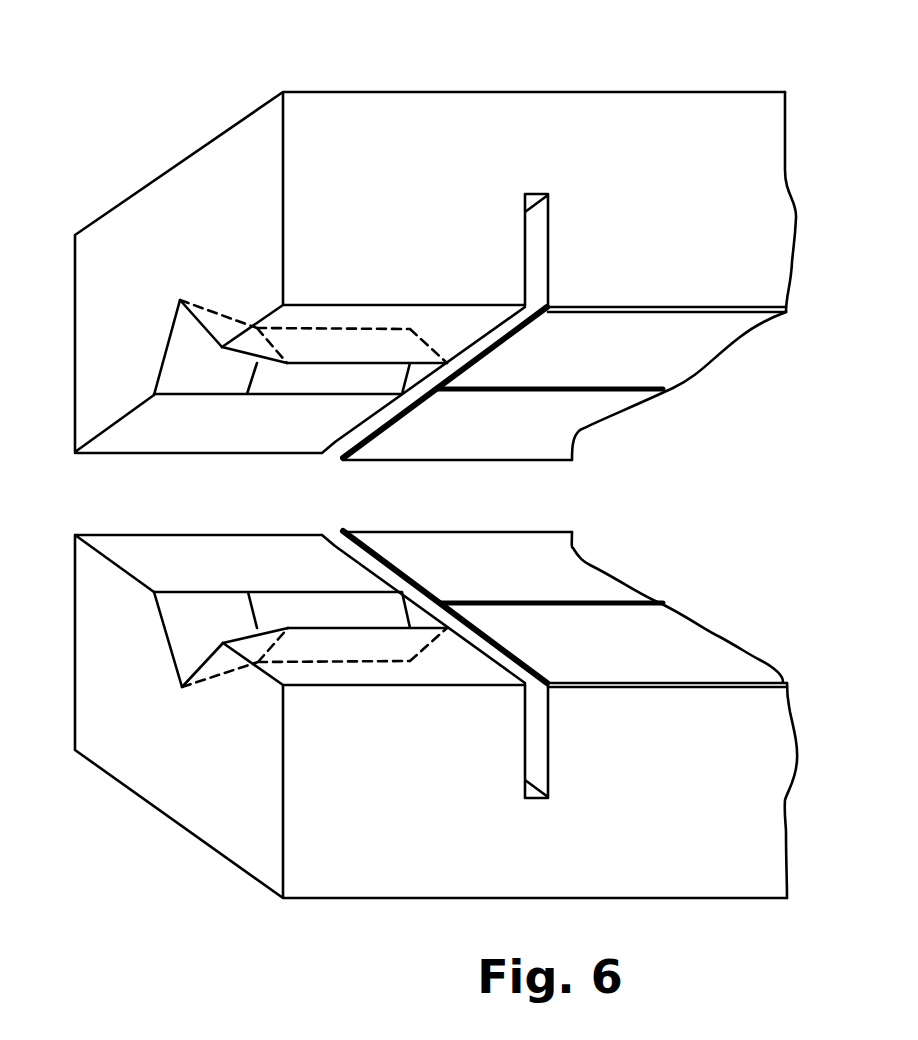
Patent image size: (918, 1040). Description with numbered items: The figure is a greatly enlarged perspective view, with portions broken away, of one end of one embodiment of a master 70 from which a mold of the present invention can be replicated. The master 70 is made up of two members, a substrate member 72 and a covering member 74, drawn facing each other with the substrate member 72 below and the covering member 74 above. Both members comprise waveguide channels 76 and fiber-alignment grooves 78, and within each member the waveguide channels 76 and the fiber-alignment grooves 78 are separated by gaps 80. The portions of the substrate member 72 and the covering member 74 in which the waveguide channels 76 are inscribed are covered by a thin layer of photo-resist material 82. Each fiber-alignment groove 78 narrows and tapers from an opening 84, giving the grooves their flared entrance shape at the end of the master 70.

The master 70 is at (446, 508).
The substrate member 72 is at (737, 807).
The covering member 74 is at (747, 272).
The waveguide channels 76 is at (620, 600).
The fiber-alignment grooves 78 is at (303, 617).
The gaps 80 is at (343, 548).
The photo-resist material 82 is at (522, 555).
The opening 84 is at (190, 357).